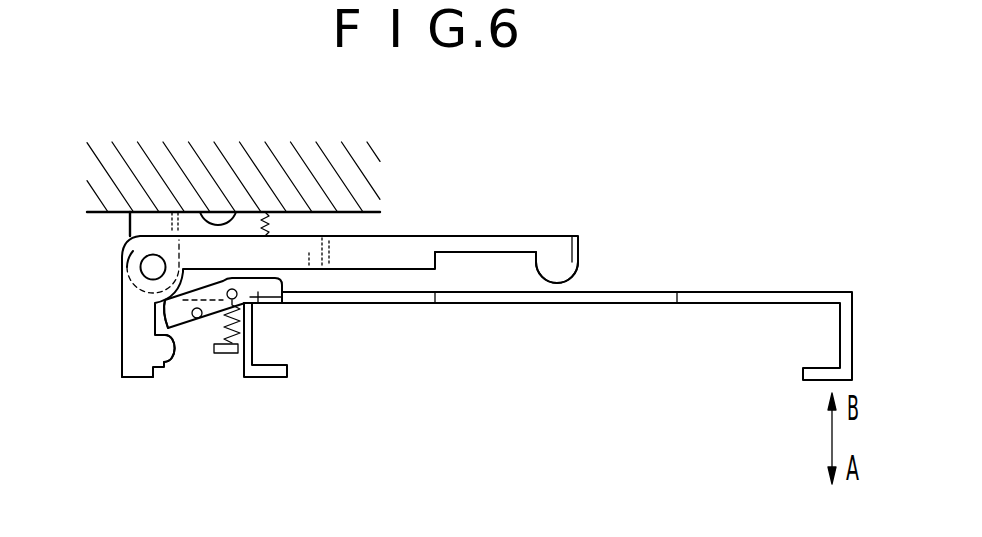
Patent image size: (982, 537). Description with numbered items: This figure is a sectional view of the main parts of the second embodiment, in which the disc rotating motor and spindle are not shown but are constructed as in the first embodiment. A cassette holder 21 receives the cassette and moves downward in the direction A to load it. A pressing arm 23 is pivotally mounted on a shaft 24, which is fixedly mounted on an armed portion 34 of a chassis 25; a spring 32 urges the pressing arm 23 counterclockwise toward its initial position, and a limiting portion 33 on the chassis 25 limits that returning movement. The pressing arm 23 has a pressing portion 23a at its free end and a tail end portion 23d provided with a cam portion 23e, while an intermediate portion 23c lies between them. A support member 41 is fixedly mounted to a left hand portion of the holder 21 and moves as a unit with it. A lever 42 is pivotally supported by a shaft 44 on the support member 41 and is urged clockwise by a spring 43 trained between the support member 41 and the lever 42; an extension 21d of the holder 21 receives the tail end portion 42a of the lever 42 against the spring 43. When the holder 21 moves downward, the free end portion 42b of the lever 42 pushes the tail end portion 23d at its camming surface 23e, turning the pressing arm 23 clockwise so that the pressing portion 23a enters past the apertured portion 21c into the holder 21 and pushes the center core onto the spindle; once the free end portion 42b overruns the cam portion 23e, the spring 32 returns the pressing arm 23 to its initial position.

The cassette holder 21 is at (708, 291).
The apertured portion 21c is at (594, 304).
The extension 21d is at (264, 300).
The pressing arm 23 is at (398, 250).
The pressing portion 23a is at (558, 257).
The intermediate portion of slide plate 23c is at (487, 238).
The tail end portion 23d is at (124, 353).
The cam portion 23e is at (172, 360).
The shaft 24 is at (152, 267).
The chassis 25 is at (113, 172).
The spring 32 is at (268, 227).
The limiting portion 33 is at (218, 222).
The armed portion 34 is at (128, 232).
The support member 41 is at (220, 354).
The lever 42 is at (210, 292).
The tail end portion 42a is at (284, 282).
The free end portion 42b is at (173, 332).
The spring 43 is at (230, 354).
The shaft 44 is at (194, 320).